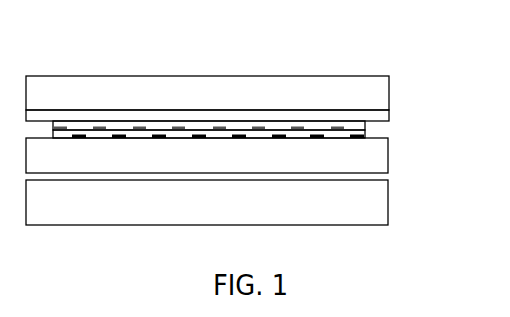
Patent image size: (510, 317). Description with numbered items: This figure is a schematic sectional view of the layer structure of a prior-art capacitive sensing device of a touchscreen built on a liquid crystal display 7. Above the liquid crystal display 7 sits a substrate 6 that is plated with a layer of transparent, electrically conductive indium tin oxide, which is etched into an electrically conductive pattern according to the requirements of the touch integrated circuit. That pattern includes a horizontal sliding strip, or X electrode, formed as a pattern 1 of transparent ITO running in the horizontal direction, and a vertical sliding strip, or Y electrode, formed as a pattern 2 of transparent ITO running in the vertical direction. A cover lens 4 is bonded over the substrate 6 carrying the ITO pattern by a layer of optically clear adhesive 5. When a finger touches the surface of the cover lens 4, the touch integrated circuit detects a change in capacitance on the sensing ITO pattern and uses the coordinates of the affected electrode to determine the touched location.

The cover lens 4 is at (309, 89).
The optically clear adhesive 5 is at (310, 116).
The pattern of transparent ITO in a horizontal direction 1 is at (336, 127).
The pattern of transparent ITO in a vertical direction 2 is at (349, 137).
The substrate 6 is at (390, 156).
The liquid crystal display 7 is at (357, 203).